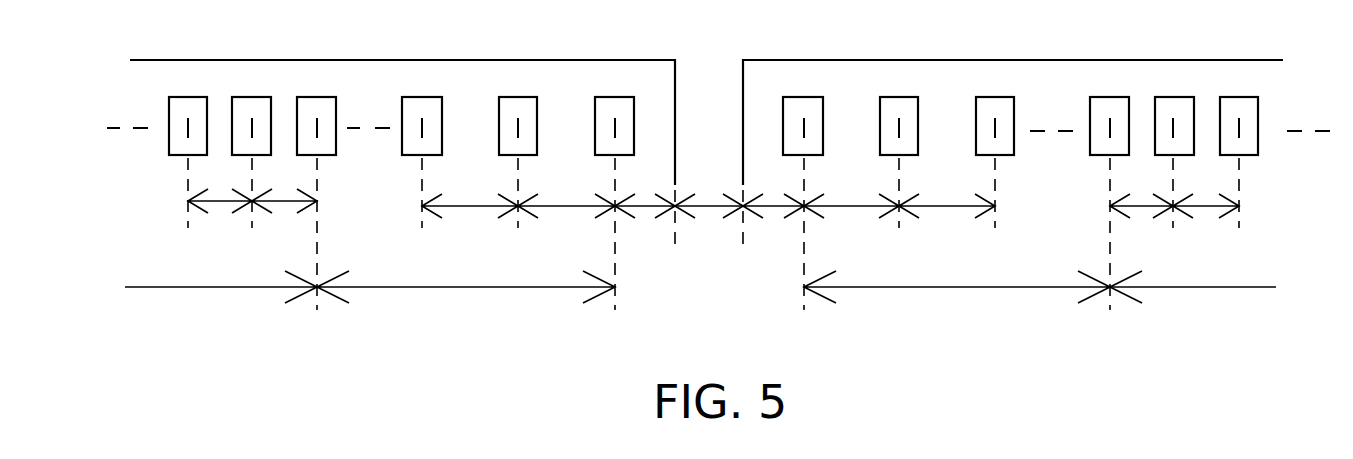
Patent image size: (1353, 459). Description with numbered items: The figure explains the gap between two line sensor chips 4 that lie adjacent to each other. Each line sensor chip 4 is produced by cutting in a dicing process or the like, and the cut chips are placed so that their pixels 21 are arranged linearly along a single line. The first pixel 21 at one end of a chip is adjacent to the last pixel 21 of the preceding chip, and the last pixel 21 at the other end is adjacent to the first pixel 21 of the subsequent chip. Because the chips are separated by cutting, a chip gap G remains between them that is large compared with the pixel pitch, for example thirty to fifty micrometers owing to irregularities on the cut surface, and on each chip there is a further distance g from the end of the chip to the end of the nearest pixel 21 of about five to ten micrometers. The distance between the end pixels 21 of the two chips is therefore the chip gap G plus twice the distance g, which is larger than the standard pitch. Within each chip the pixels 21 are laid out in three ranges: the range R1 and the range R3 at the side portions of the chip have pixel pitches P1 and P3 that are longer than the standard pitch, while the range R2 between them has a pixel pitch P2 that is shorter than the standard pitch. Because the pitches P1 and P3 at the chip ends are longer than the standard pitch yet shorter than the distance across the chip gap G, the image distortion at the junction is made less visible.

The line sensor chip 4 is at (225, 59).
The pixel 21 is at (900, 105).
The pixel pitch P1 is at (899, 191).
The pixel pitch P2 is at (713, 191).
The pixel pitch P3 is at (528, 191).
The range R1 is at (973, 304).
The range R2 is at (1193, 318).
The range R3 is at (370, 304).
The distance from chip end to pixel end g is at (719, 223).
The chip gap G is at (709, 229).